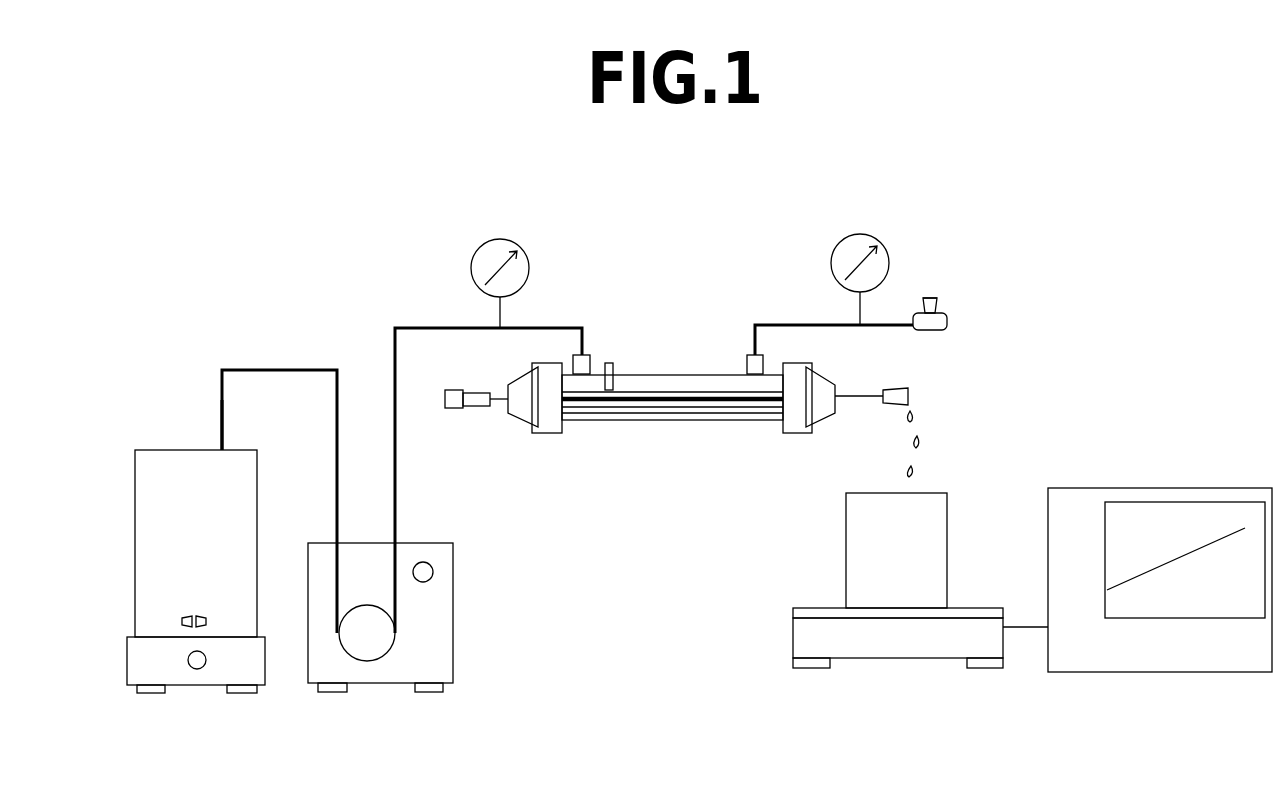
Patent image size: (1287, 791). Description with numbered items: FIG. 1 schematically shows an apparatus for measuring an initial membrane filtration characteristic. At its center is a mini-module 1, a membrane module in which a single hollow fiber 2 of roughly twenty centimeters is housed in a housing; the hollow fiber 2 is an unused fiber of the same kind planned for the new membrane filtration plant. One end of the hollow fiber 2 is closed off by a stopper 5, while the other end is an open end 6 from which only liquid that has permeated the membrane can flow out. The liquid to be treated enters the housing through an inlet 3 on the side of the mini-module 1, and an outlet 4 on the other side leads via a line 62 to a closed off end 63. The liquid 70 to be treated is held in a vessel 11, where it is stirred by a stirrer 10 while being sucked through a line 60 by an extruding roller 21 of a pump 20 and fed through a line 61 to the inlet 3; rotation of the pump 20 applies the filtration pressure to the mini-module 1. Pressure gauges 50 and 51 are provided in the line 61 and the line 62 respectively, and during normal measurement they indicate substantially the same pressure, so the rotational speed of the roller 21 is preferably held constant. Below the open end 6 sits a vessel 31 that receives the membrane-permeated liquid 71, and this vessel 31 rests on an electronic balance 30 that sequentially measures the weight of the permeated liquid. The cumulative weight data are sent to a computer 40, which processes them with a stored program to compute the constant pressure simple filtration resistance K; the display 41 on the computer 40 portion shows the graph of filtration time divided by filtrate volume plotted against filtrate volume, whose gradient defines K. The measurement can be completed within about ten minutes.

The mini-module 1 is at (730, 420).
The hollow fiber 2 is at (620, 407).
The inlet 3 is at (592, 356).
The outlet 4 is at (747, 356).
The stopper 5 is at (482, 408).
The open end 6 is at (910, 393).
The stirrer 10 is at (128, 657).
The vessel 11 is at (135, 490).
The pump 20 is at (460, 638).
The extruding roller 21 is at (372, 653).
The electronic balance 30 is at (902, 643).
The vessel 31 is at (858, 545).
The computer 40 is at (1095, 672).
The display screen 41 is at (1155, 500).
The pressure gauge 50 is at (498, 238).
The pressure gauge 51 is at (860, 235).
The line 60 is at (278, 368).
The line 61 is at (423, 327).
The line 62 is at (783, 322).
The closed off end 63 is at (947, 317).
The liquid to be treated 70 is at (165, 465).
The membrane-permeated liquid 71 is at (920, 442).